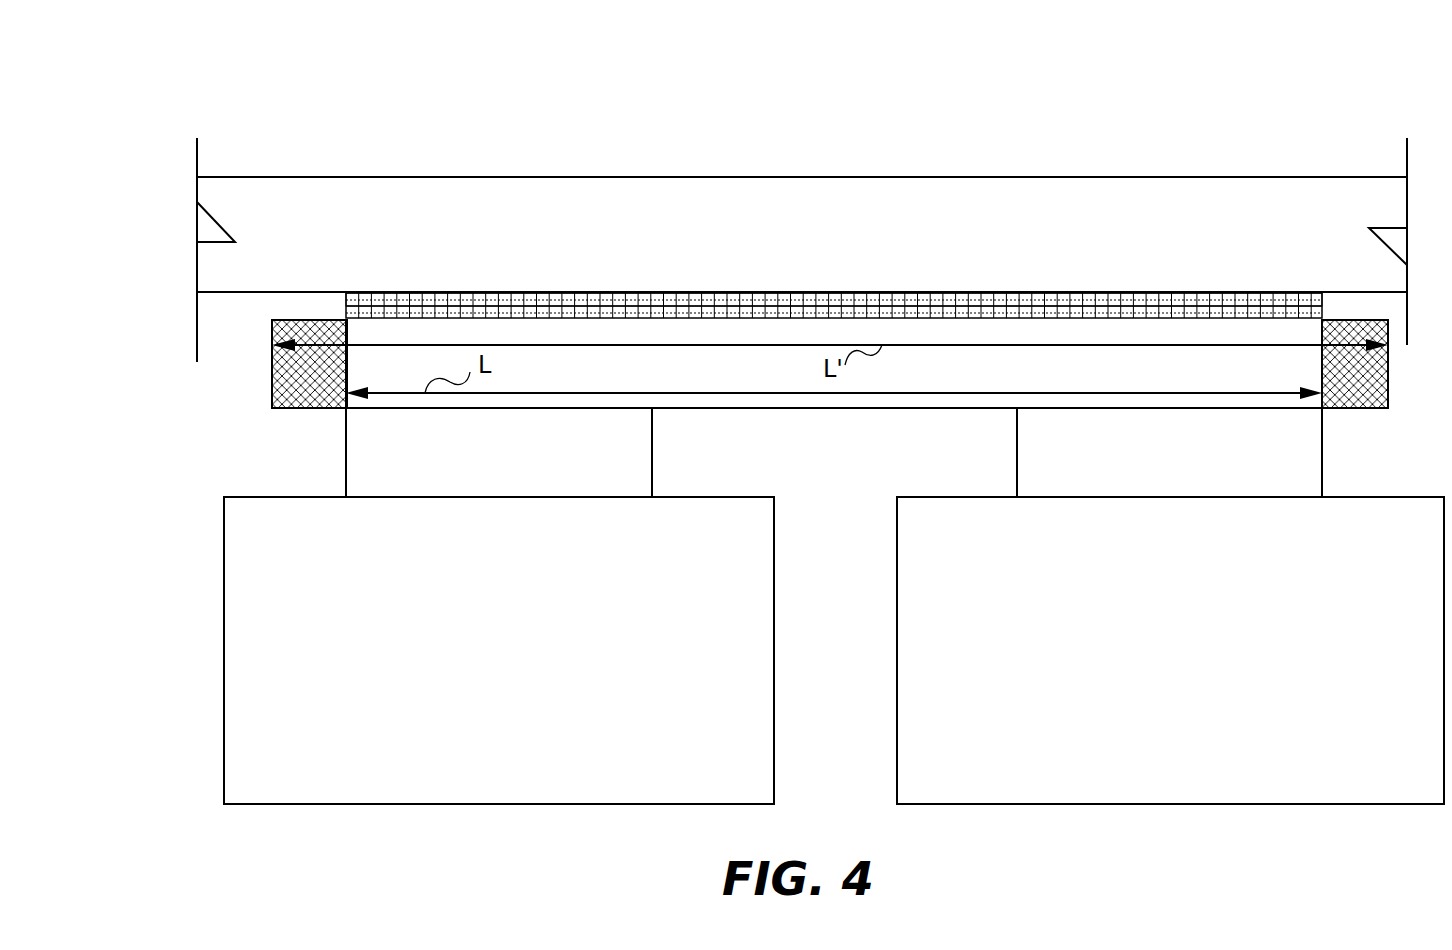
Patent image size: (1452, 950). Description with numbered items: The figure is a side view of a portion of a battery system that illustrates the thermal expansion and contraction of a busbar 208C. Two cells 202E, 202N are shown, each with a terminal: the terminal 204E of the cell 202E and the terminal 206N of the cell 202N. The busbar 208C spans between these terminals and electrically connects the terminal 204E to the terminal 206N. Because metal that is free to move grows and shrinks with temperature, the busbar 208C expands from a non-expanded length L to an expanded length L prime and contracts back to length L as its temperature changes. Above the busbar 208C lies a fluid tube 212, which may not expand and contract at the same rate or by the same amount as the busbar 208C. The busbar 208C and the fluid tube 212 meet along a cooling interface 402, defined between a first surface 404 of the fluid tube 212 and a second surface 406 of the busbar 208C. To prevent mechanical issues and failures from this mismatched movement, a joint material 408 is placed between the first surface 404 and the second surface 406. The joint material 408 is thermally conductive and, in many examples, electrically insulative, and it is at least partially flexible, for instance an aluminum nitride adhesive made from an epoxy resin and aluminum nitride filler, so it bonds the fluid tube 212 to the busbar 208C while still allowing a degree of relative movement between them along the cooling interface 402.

The fluid tube 212 is at (940, 177).
The cooling interface 402 is at (248, 314).
The first surface 404 is at (320, 287).
The second surface 406 is at (381, 313).
The joint material 408 is at (863, 293).
The busbar 208C is at (807, 410).
The terminal 204E is at (652, 437).
The terminal 206N is at (1017, 451).
The cell 202E is at (224, 620).
The cell 202N is at (897, 642).